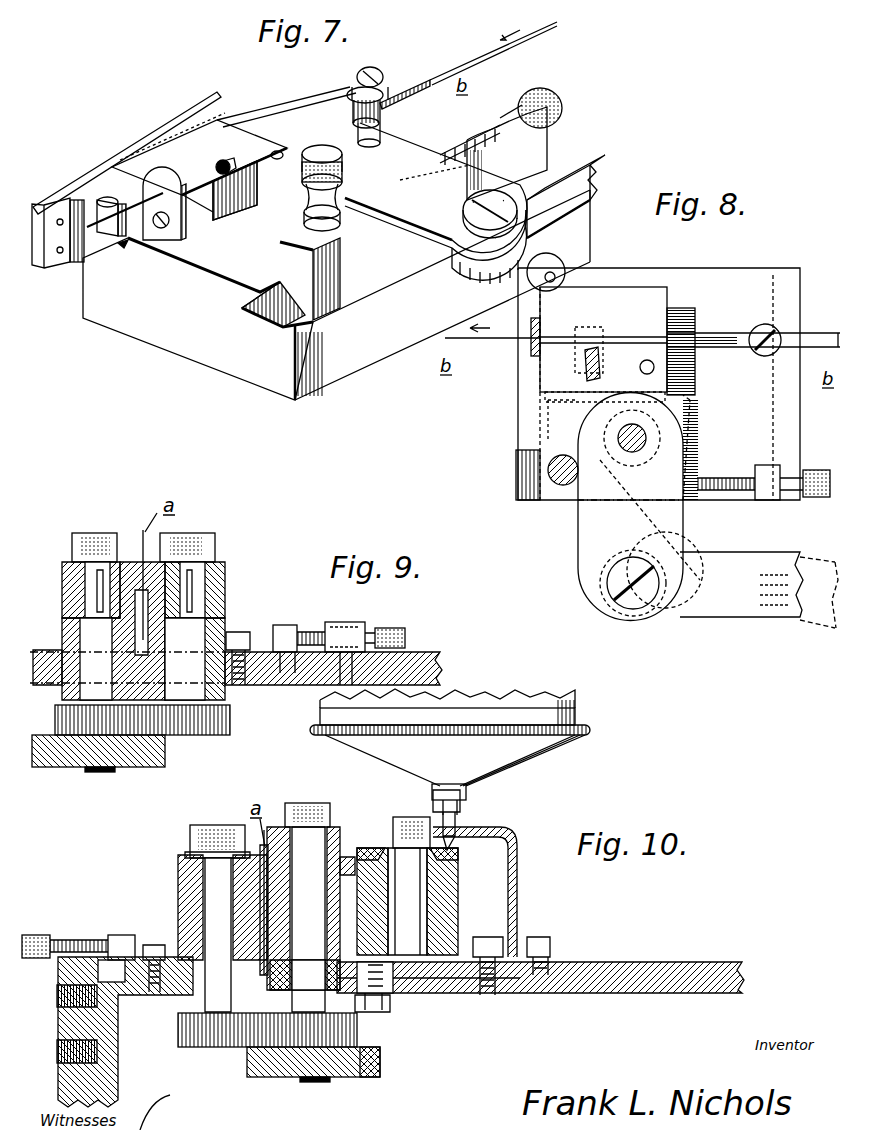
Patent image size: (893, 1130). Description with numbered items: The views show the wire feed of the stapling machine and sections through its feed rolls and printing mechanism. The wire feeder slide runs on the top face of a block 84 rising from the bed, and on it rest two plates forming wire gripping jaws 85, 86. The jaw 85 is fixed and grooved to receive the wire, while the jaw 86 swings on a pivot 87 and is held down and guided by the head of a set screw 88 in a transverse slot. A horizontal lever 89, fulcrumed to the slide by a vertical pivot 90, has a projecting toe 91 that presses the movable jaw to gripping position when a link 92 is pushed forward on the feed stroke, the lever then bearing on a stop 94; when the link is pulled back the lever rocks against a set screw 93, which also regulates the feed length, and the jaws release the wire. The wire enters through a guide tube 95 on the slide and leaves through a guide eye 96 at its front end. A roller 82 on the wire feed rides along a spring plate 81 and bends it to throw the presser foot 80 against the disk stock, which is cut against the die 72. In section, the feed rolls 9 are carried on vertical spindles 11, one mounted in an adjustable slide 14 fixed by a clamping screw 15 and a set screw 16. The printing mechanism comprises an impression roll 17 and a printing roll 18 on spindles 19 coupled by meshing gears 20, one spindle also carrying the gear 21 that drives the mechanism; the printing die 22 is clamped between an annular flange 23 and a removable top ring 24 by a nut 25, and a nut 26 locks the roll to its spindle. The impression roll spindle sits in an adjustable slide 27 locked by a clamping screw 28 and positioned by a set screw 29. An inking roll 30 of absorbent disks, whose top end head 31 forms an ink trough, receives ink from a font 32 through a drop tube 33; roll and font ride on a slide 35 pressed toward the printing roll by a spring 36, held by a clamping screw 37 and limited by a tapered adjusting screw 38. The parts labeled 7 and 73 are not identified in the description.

In FIG. 9, the base plate 7 is at (417, 663).
In FIG. 10, the base plate 7 is at (637, 983).
In FIG. 9, the feed rolls 9 is at (67, 572).
In FIG. 9, the vertical spindle 11 is at (87, 636).
In FIG. 9, the adjustable slide 14 is at (273, 647).
In FIG. 9, the clamping screw 15 is at (230, 638).
In FIG. 9, the set screw 16 is at (315, 637).
In FIG. 10, the impression roll 17 is at (217, 902).
In FIG. 10, the printing roll 18 is at (362, 848).
In FIG. 10, the vertical spindles 19 is at (180, 873).
In FIG. 10, the meshing gears 20 is at (187, 1040).
In FIG. 10, the gear 21 is at (273, 1067).
In FIG. 10, the printing die 22 is at (273, 933).
In FIG. 10, the annular flange 23 is at (332, 967).
In FIG. 10, the top ring 24 is at (340, 867).
In FIG. 10, the nut 25 is at (283, 860).
In FIG. 10, the nut 26 is at (300, 860).
In FIG. 10, the adjustable slide 27 is at (183, 973).
In FIG. 10, the clamping screw 28 is at (160, 928).
In FIG. 10, the set screw 29 is at (87, 940).
In FIG. 10, the inking roll 30 is at (443, 892).
In FIG. 10, the top end head 31 is at (365, 852).
In FIG. 9, the ink font 32 is at (497, 763).
In FIG. 10, the ink font 32 is at (446, 820).
In FIG. 10, the ink discharge tube 33 is at (467, 837).
In FIG. 10, the adjustable slide 35 is at (462, 980).
In FIG. 10, the spring 36 is at (555, 953).
In FIG. 10, the clamping screw 37 is at (488, 938).
In FIG. 10, the adjusting screw 38 is at (385, 1012).
In FIG. 9, the die 72 is at (58, 718).
In FIG. 9, the gear 73 is at (58, 753).
In FIG. 7, the presser foot 80 is at (33, 204).
In FIG. 7, the spring plate 81 is at (163, 135).
In FIG. 7, the roller 82 is at (80, 247).
In FIG. 8, the roller 82 is at (562, 262).
In FIG. 7, the block 84 is at (188, 333).
In FIG. 7, the fixed wire gripping jaw 85 is at (180, 157).
In FIG. 8, the fixed wire gripping jaw 85 is at (615, 307).
In FIG. 7, the movable wire gripping jaw 86 is at (202, 185).
In FIG. 8, the movable wire gripping jaw 86 is at (627, 348).
In FIG. 7, the pivot 87 is at (277, 150).
In FIG. 8, the pivot 87 is at (653, 360).
In FIG. 7, the set screw 88 is at (222, 157).
In FIG. 8, the set screw 88 is at (580, 353).
In FIG. 7, the lever 89 is at (453, 227).
In FIG. 8, the lever 89 is at (640, 507).
In FIG. 7, the vertical pivot 90 is at (347, 168).
In FIG. 8, the vertical pivot 90 is at (627, 452).
In FIG. 7, the toe 91 is at (277, 178).
In FIG. 8, the toe 91 is at (587, 400).
In FIG. 7, the link 92 is at (566, 190).
In FIG. 8, the link 92 is at (728, 607).
In FIG. 7, the set screw 93 is at (507, 110).
In FIG. 8, the set screw 93 is at (720, 478).
In FIG. 7, the stop 94 is at (315, 222).
In FIG. 8, the stop 94 is at (552, 487).
In FIG. 7, the guide tube 95 is at (428, 74).
In FIG. 8, the guide tube 95 is at (817, 333).
In FIG. 7, the guide eye 96 is at (135, 240).
In FIG. 8, the guide eye 96 is at (532, 352).